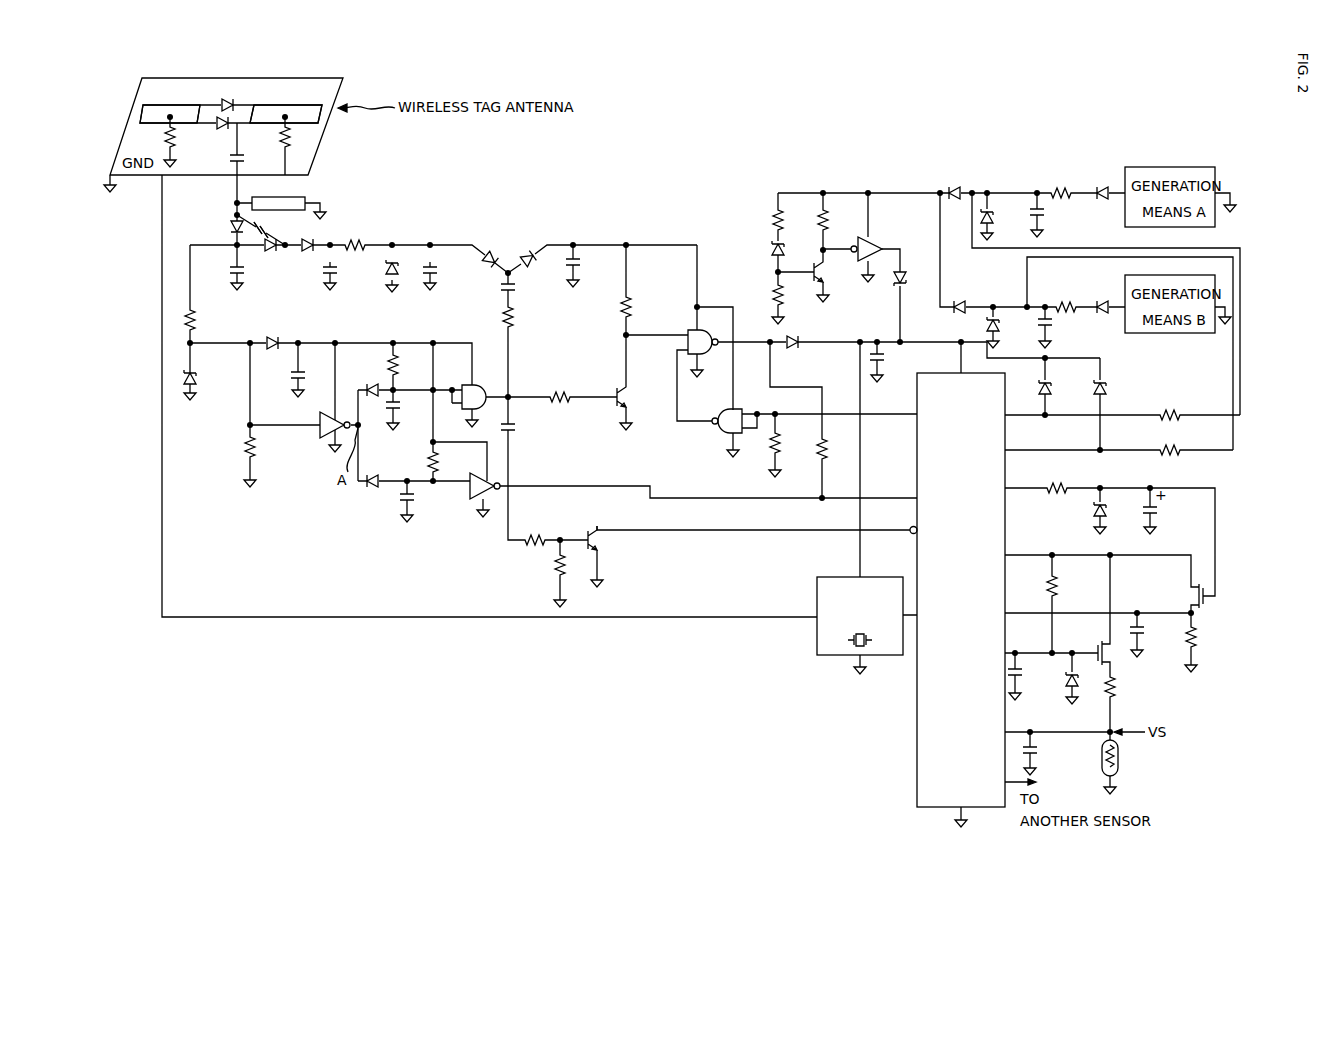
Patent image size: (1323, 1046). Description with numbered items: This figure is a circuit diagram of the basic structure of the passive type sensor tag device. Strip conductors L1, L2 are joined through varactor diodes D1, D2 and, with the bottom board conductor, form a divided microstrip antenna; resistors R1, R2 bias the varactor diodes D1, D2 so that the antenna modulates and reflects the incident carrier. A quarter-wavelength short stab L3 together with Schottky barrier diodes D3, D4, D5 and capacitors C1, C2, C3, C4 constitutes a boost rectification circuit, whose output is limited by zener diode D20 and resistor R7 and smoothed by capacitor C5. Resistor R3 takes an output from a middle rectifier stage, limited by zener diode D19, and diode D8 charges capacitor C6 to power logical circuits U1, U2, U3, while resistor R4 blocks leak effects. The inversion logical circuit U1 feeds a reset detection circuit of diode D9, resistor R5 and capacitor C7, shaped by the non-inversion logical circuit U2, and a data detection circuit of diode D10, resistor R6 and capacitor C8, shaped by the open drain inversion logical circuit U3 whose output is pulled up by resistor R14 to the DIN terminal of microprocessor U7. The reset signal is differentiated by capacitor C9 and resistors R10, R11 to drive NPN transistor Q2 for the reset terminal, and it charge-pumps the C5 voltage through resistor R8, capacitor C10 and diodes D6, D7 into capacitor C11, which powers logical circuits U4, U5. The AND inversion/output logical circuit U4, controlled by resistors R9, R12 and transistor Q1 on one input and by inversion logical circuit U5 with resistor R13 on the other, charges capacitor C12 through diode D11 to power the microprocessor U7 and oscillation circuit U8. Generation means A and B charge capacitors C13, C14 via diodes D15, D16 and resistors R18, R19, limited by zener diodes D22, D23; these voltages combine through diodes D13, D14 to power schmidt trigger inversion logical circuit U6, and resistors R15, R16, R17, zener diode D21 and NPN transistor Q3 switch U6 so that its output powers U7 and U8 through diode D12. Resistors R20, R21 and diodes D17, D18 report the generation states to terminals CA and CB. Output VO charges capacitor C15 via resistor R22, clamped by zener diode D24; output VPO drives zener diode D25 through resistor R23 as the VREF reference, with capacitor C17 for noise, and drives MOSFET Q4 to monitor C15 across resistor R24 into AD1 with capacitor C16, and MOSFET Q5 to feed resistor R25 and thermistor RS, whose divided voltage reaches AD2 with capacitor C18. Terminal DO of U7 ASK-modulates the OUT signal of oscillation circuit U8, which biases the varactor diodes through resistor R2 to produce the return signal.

The strip conductor L1 is at (170, 105).
The strip conductor L2 is at (286, 105).
The λ/4 short stab L3 is at (278, 194).
The varactor diode D1 is at (218, 134).
The varactor diode D2 is at (228, 95).
The Schottky barrier diode D3 is at (225, 228).
The Schottky barrier diode D4 is at (272, 253).
The Schottky barrier diode D5 is at (308, 253).
The Schottky barrier diode D6 is at (490, 250).
The Schottky barrier diode D7 is at (528, 250).
The Schottky barrier diode D8 is at (273, 336).
The Schottky barrier diode D9 is at (370, 381).
The Schottky barrier diode D10 is at (379, 472).
The Schottky barrier diode D11 is at (794, 335).
The Schottky barrier diode D12 is at (915, 279).
The Schottky barrier diode D13 is at (956, 184).
The Schottky barrier diode D14 is at (962, 299).
The Schottky barrier diode D15 is at (1102, 183).
The Schottky barrier diode D16 is at (1104, 299).
The Schottky barrier diode D17 is at (1060, 388).
The Schottky barrier diode D18 is at (1115, 388).
The zener diode D19 is at (207, 375).
The zener diode D20 is at (405, 263).
The zener diode D21 is at (780, 249).
The zener diode D22 is at (1004, 217).
The zener diode D23 is at (1011, 329).
The zener diode D24 is at (1115, 513).
The zener diode D25 is at (1087, 688).
The resistor R1 is at (176, 137).
The resistor R2 is at (288, 137).
The resistor R3 is at (207, 320).
The resistor R4 is at (263, 452).
The resistor R5 is at (409, 364).
The resistor R6 is at (451, 459).
The resistor R7 is at (359, 230).
The resistor R8 is at (523, 321).
The resistor R9 is at (569, 398).
The resistor R10 is at (538, 524).
The resistor R11 is at (556, 565).
The resistor R12 is at (645, 306).
The resistor R13 is at (791, 443).
The resistor R14 is at (836, 447).
The resistor R15 is at (779, 220).
The resistor R16 is at (779, 295).
The resistor R17 is at (838, 221).
The resistor R18 is at (1064, 193).
The resistor R19 is at (1066, 307).
The resistor R20 is at (1167, 415).
The resistor R21 is at (1176, 459).
The resistor R22 is at (1055, 487).
The resistor R23 is at (1072, 589).
The resistor R24 is at (1206, 636).
The resistor R25 is at (1125, 694).
The thermistor element RS is at (1124, 758).
The capacitor C1 is at (247, 159).
The capacitor C2 is at (271, 225).
The capacitor C3 is at (245, 275).
The capacitor C4 is at (344, 275).
The capacitor C5 is at (440, 275).
The capacitor C6 is at (296, 377).
The capacitor C7 is at (410, 414).
The capacitor C8 is at (413, 498).
The capacitor C9 is at (531, 436).
The capacitor C10 is at (509, 287).
The capacitor C11 is at (593, 265).
The capacitor C12 is at (893, 362).
The capacitor C13 is at (1054, 226).
The capacitor C14 is at (1058, 337).
The capacitor C15 is at (1169, 516).
The capacitor C16 is at (1154, 638).
The capacitor C17 is at (1036, 677).
The capacitor C18 is at (1052, 756).
The inversion logical circuit U1 is at (334, 416).
The non-inversion (buffer) logical circuit U2 is at (464, 388).
The open drain type inversion logical circuit U3 is at (480, 478).
The AND inversion/output logical circuit U4 is at (704, 334).
The inversion logical circuit U5 is at (739, 413).
The schmidt trigger type inversion logical circuit U6 is at (872, 241).
The microprocessor U7 is at (961, 581).
The oscillation circuit U8 is at (860, 606).
The NPN transistor Q1 is at (632, 397).
The NPN transistor Q2 is at (602, 540).
The NPN transistor Q3 is at (827, 272).
The N-channel MOSFET Q4 is at (1188, 596).
The N-channel MOSFET Q5 is at (1111, 653).